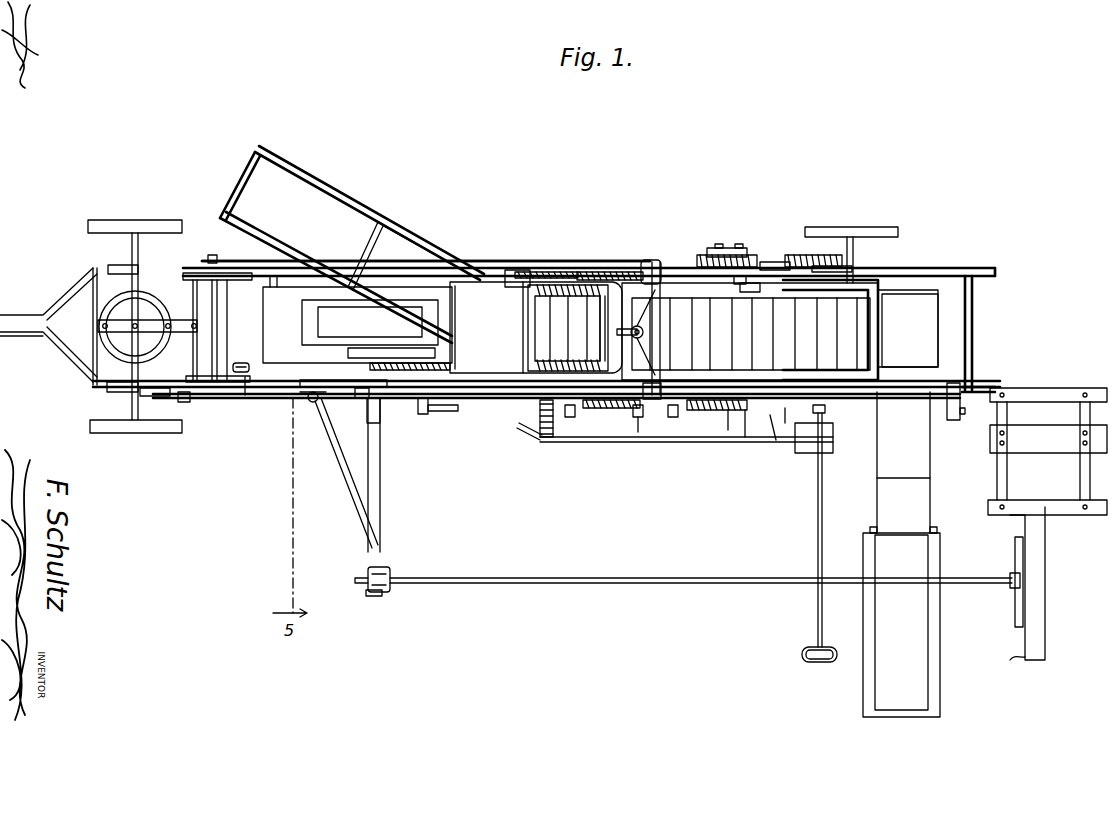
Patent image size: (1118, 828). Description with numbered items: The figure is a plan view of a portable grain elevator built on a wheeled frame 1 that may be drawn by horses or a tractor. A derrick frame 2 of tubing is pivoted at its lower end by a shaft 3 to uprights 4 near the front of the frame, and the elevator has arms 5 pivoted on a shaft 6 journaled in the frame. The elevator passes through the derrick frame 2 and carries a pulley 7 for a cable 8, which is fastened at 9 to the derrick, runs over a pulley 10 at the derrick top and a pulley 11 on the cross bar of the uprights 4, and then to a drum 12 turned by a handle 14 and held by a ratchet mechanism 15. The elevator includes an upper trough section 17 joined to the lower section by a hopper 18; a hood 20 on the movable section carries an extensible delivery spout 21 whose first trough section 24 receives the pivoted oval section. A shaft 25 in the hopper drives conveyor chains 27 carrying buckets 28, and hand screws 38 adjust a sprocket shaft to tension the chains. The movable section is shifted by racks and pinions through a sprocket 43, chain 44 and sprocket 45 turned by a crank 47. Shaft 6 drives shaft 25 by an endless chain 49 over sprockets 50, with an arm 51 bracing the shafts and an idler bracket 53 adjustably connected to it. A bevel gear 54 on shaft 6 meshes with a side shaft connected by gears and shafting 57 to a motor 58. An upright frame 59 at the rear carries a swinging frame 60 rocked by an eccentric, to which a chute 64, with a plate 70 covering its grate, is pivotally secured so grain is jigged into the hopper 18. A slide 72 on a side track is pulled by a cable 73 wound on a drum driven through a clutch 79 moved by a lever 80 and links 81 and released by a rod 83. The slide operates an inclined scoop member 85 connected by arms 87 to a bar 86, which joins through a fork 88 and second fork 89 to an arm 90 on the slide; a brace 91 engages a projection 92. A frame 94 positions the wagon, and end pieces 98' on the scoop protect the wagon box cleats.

The wheeled frame 1 is at (962, 270).
The derrick frame 2 is at (488, 262).
The shaft 3 is at (210, 358).
The uprights 4 is at (186, 268).
The arms 5 is at (748, 283).
The shaft 6 is at (730, 412).
The pulley 7 is at (650, 332).
The cable 8 is at (250, 366).
The cable fastening point 9 is at (664, 272).
The pulley 10 is at (663, 380).
The pulley 11 is at (248, 398).
The drum 12 is at (486, 410).
The handle 14 is at (426, 416).
The ratchet mechanism 15 is at (444, 413).
The upper trough section 17 is at (768, 292).
The hopper 18 is at (908, 328).
The hood 20 is at (536, 327).
The extensible delivery spout 21 is at (275, 150).
The first trough section 24 is at (402, 258).
The shaft 25 is at (822, 255).
The conveyor chains 27 is at (581, 292).
The buckets 28 is at (553, 305).
The hand screws 38 is at (507, 268).
The sprocket 43 is at (530, 272).
The chain 44 is at (608, 272).
The sprocket 45 is at (638, 268).
The crank 47 is at (632, 435).
The endless chain 49 is at (832, 258).
The sprockets 50 is at (702, 255).
The arm 51 is at (790, 266).
The bracket 53 is at (728, 248).
The bevel gear 54 is at (713, 412).
The gears and shafting 57 is at (549, 430).
The motor 58 is at (357, 319).
The upright frame 59 is at (955, 380).
The swinging frame 60 is at (910, 398).
The chute 64 is at (872, 690).
The plate 70 is at (903, 494).
The slide 72 is at (342, 380).
The cable 73 is at (185, 392).
The clutch 79 is at (621, 415).
The lever 80 is at (816, 622).
The links 81 is at (790, 420).
The rod 83 is at (357, 400).
The inclined scoop member 85 is at (1040, 627).
The bar 86 is at (664, 585).
The arms 87 is at (1012, 612).
The fork 88 is at (392, 572).
The second fork 89 is at (380, 597).
The arm 90 is at (381, 520).
The brace 91 is at (346, 495).
The projection 92 is at (311, 405).
The frame 94 is at (1060, 388).
The end pieces 98' is at (1012, 679).